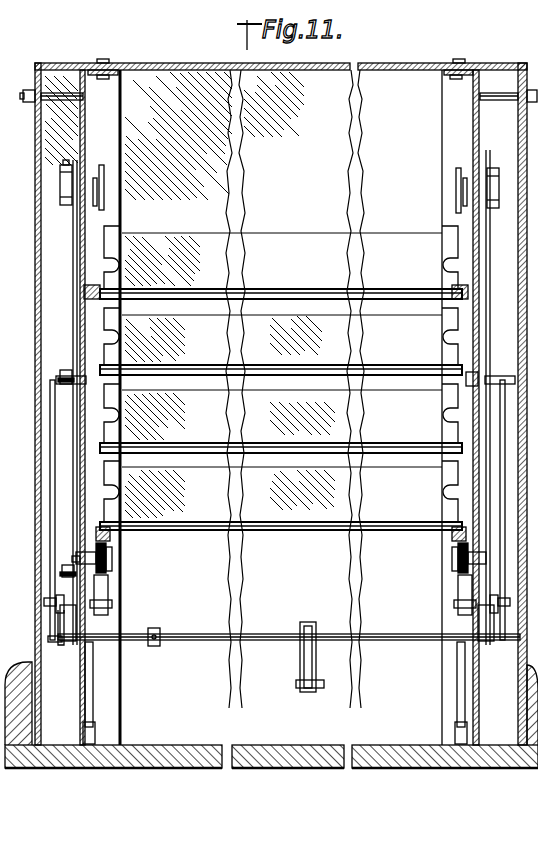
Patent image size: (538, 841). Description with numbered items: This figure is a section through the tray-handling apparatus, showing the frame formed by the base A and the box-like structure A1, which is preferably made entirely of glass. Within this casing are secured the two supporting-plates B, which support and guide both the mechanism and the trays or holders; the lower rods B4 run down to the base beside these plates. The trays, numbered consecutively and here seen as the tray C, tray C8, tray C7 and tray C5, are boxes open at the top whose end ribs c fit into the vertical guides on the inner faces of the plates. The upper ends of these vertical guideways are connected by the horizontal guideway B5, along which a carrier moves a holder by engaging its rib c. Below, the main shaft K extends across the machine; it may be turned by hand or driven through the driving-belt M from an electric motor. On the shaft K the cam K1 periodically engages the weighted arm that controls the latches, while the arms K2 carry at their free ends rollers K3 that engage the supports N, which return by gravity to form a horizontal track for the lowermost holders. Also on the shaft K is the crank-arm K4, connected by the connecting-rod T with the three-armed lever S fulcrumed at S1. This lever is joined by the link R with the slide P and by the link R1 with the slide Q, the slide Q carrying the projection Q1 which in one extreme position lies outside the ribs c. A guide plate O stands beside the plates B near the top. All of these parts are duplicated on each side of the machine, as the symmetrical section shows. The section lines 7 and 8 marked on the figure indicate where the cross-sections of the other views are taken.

The section line 7- 7 is at (45, 60).
The section line 8- 8 is at (518, 62).
The base A is at (315, 768).
The box-like structure A1 is at (205, 63).
The supporting-plates B is at (279, 407).
The lower supporting rods B4 is at (93, 708).
The horizontal guideway B5 is at (452, 298).
The tray C is at (282, 179).
The tray C8 is at (282, 338).
The tray C7 is at (282, 415).
The tray C5 is at (282, 492).
The ribs c is at (108, 240).
The guide plate O is at (97, 190).
The slide P is at (68, 212).
The link R is at (62, 178).
The link R1 is at (62, 572).
The three-armed lever S is at (73, 270).
The fulcrum S1 is at (500, 355).
The connecting-rod T is at (50, 500).
The supports N is at (110, 535).
The main shaft K is at (200, 640).
The cam K1 is at (153, 646).
The arms K2 is at (108, 596).
The rollers K3 is at (112, 563).
The crank-arm K4 is at (500, 658).
The slide Q is at (56, 645).
The projection Q1 is at (470, 562).
The driving-belt M is at (304, 664).